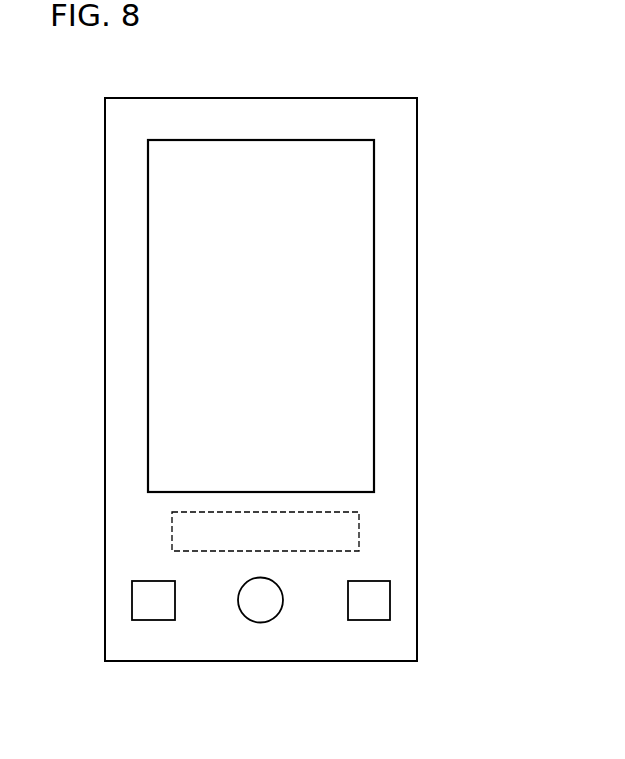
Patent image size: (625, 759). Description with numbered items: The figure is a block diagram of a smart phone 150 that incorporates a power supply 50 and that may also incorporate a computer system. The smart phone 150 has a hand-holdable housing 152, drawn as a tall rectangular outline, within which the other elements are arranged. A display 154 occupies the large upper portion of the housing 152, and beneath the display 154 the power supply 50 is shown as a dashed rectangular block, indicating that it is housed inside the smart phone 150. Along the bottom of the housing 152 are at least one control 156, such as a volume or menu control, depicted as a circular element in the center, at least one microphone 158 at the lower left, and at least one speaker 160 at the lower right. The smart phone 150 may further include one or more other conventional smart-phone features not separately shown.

The smart phone 150 is at (405, 73).
The hand-holdable housing 152 is at (417, 122).
The display 154 is at (374, 280).
The power supply 50 is at (359, 532).
The control 156 is at (281, 612).
The microphone 158 is at (148, 620).
The speaker 160 is at (390, 600).